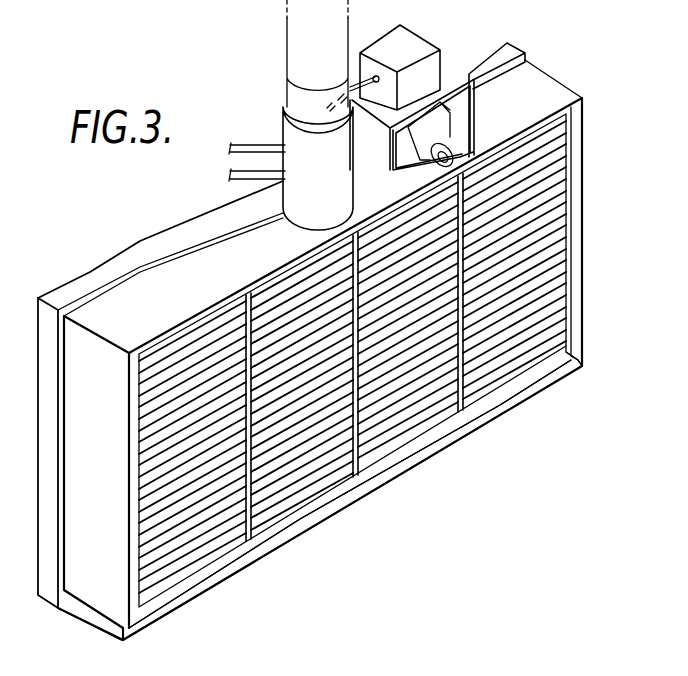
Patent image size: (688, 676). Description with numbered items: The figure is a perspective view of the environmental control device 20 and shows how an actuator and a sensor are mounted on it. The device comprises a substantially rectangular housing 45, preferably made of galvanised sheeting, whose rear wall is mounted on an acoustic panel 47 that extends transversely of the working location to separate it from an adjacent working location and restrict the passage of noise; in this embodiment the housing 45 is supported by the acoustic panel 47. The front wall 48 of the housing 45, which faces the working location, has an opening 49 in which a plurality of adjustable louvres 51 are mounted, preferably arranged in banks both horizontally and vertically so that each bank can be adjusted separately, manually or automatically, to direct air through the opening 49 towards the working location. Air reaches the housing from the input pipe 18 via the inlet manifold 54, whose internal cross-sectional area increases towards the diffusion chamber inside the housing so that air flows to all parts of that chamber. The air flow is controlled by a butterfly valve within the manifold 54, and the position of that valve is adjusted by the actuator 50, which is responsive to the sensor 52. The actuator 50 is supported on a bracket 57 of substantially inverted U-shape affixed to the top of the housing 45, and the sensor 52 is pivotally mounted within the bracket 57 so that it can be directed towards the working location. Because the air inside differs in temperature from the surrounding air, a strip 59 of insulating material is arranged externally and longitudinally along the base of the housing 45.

The input pipe 18 is at (288, 58).
The environmental control device 20 is at (583, 233).
The housing 45 is at (542, 79).
The acoustic panel 47 is at (48, 318).
The front wall 48 is at (569, 358).
The opening 49 is at (548, 329).
The actuator 50 is at (415, 50).
The adjustable louvres 51 is at (418, 417).
The sensor 52 is at (458, 130).
The inlet manifold 54 is at (285, 101).
The bracket 57 is at (450, 68).
The strip of insulating material 59 is at (188, 597).